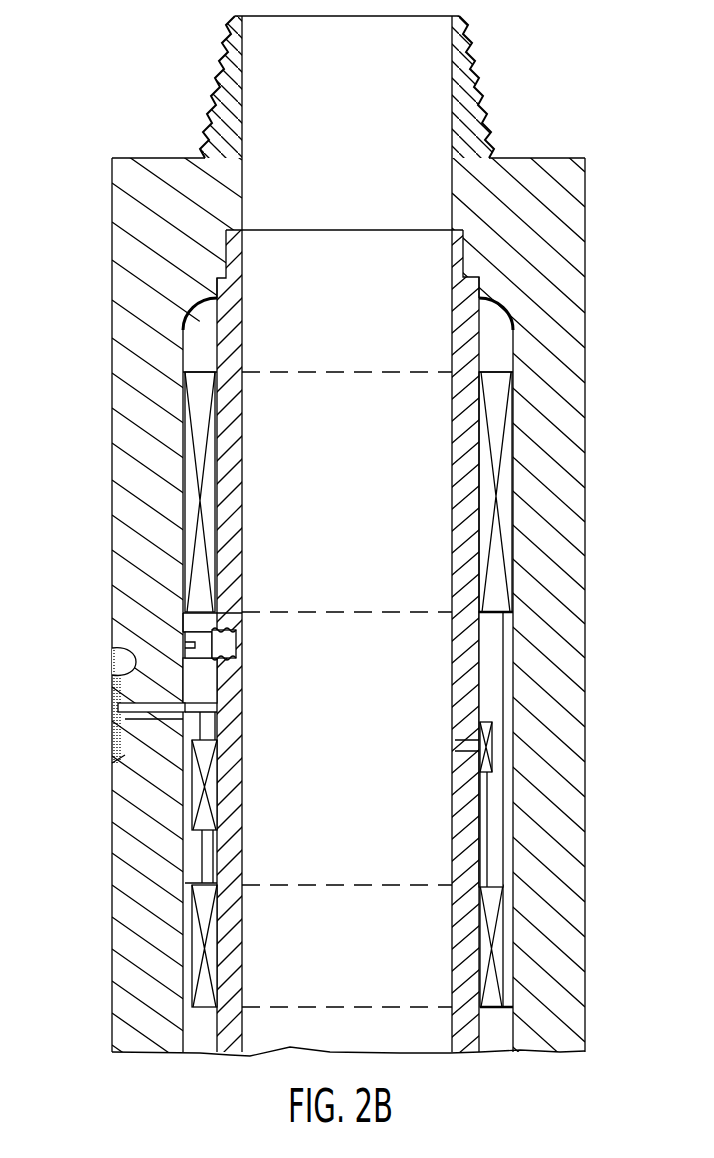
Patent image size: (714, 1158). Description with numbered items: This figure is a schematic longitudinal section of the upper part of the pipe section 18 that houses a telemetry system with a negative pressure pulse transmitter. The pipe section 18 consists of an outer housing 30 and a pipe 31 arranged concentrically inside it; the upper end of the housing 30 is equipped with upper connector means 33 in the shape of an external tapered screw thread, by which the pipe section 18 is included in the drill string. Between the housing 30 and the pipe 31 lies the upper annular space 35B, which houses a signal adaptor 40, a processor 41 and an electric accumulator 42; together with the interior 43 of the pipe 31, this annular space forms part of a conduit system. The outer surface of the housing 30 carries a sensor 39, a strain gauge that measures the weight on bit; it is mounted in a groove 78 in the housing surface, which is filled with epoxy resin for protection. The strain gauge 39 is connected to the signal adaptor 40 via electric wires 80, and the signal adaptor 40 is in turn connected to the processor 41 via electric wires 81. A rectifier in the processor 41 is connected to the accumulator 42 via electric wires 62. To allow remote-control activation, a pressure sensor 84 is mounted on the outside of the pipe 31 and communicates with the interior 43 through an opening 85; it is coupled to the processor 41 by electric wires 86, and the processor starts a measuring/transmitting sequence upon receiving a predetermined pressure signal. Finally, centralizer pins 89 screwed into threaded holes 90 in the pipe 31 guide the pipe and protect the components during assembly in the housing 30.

The pipe section 18 is at (100, 225).
The housing 30 is at (145, 283).
The pipe 31 is at (228, 340).
The upper connector means 33 is at (217, 103).
The upper annular space 35B is at (500, 352).
The sensor 39 is at (118, 703).
The signal adaptor 40 is at (212, 782).
The processor 41 is at (483, 957).
The electric accumulator 42 is at (198, 545).
The interior of the pipe 43 is at (377, 421).
The electric wires 62 is at (503, 678).
The groove 78 is at (120, 650).
The electric wires 80 is at (207, 718).
The electric wires 81 is at (202, 857).
The pressure sensor 84 is at (492, 747).
The opening 85 is at (473, 744).
The electric wires 86 is at (487, 828).
The centralizer pins 89 is at (218, 630).
The threaded holes 90 is at (396, 645).